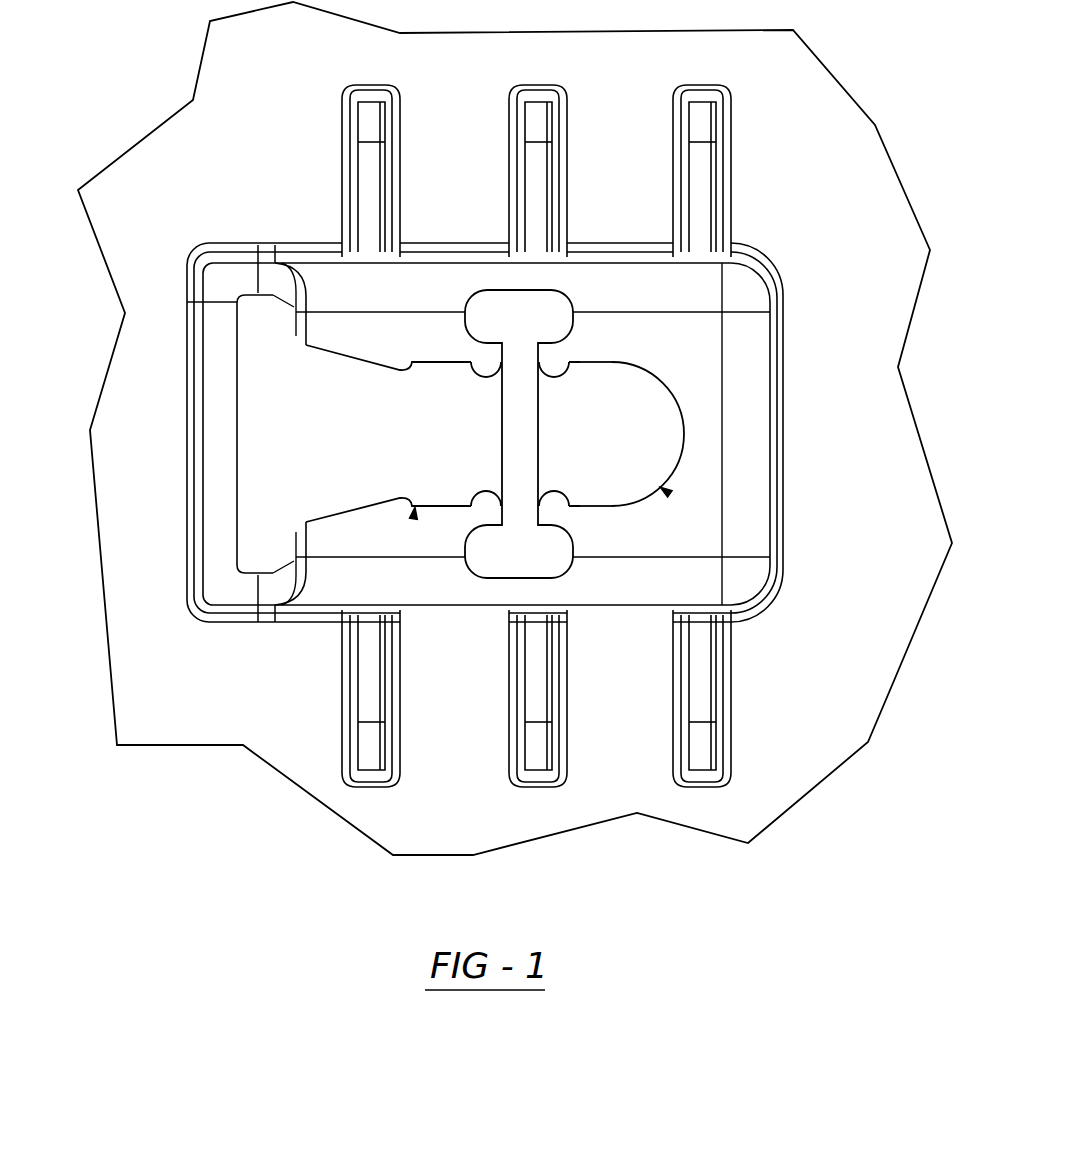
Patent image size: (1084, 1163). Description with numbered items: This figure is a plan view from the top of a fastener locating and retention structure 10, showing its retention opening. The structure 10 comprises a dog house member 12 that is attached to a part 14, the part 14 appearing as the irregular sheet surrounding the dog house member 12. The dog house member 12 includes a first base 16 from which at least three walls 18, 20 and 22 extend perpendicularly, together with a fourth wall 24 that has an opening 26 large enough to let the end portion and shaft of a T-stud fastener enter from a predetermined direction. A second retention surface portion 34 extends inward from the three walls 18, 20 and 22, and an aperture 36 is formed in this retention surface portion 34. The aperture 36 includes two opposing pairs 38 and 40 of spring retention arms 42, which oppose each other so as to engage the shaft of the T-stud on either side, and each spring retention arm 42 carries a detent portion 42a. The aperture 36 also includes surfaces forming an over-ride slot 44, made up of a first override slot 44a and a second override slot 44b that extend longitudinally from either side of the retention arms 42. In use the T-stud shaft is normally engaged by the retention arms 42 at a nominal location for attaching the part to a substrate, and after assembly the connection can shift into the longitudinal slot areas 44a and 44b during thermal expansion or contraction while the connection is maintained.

The fastener locating and retention structure 10 is at (163, 217).
The dog house member 12 is at (710, 372).
The part 14 is at (710, 155).
The first base 16 is at (345, 430).
The wall 18 is at (602, 250).
The wall 20 is at (753, 390).
The wall 22 is at (372, 598).
The fourth wall 24 is at (283, 578).
The opening 26 is at (306, 345).
The second retention surface portion 34 is at (627, 337).
The aperture 36 is at (423, 362).
The opposing pair of spring retention arms 38 is at (623, 363).
The opposing pair of spring retention arms 40 is at (603, 497).
The spring retention arm 42 is at (485, 507).
The detent portion 42a is at (484, 362).
The over-ride slot 44 is at (678, 433).
The first override slot 44a is at (660, 487).
The second override slot 44b is at (415, 507).